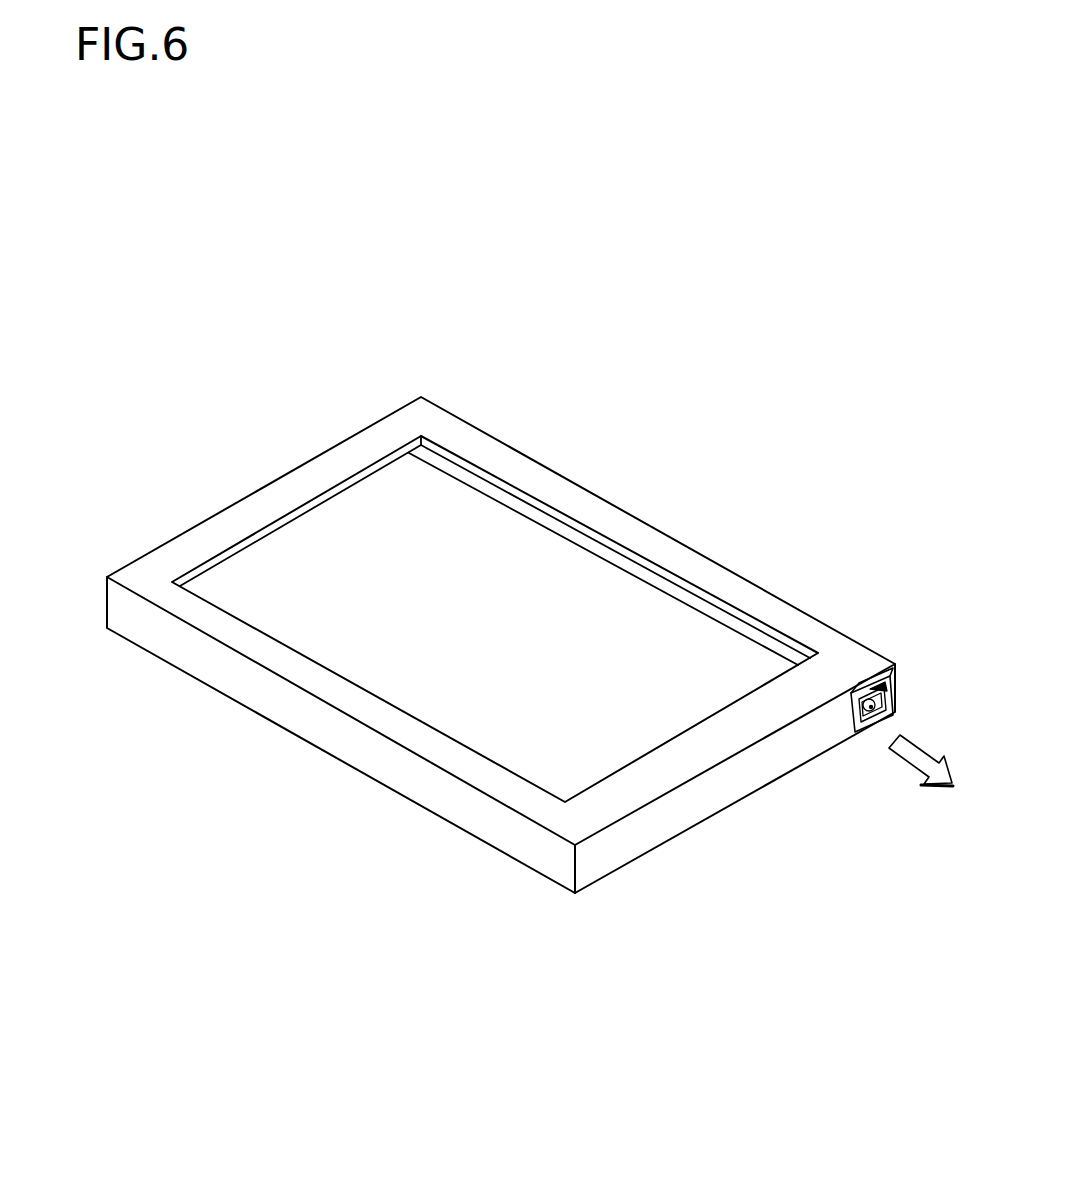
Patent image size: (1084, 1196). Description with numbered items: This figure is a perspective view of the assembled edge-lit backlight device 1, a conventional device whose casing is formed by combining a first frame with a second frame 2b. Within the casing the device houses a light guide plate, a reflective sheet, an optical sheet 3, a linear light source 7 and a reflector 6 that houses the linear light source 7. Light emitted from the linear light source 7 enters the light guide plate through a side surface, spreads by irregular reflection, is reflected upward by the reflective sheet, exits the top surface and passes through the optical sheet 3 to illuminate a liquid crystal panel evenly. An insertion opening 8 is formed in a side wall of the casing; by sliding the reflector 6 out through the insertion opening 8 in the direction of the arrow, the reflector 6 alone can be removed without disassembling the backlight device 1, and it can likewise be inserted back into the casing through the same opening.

The edge-lit backlight device 1 is at (237, 447).
The second frame 2b is at (517, 790).
The optical sheet 3 is at (468, 698).
The reflector 6 is at (871, 692).
The linear light source 7 is at (857, 731).
The insertion opening 8 is at (897, 690).